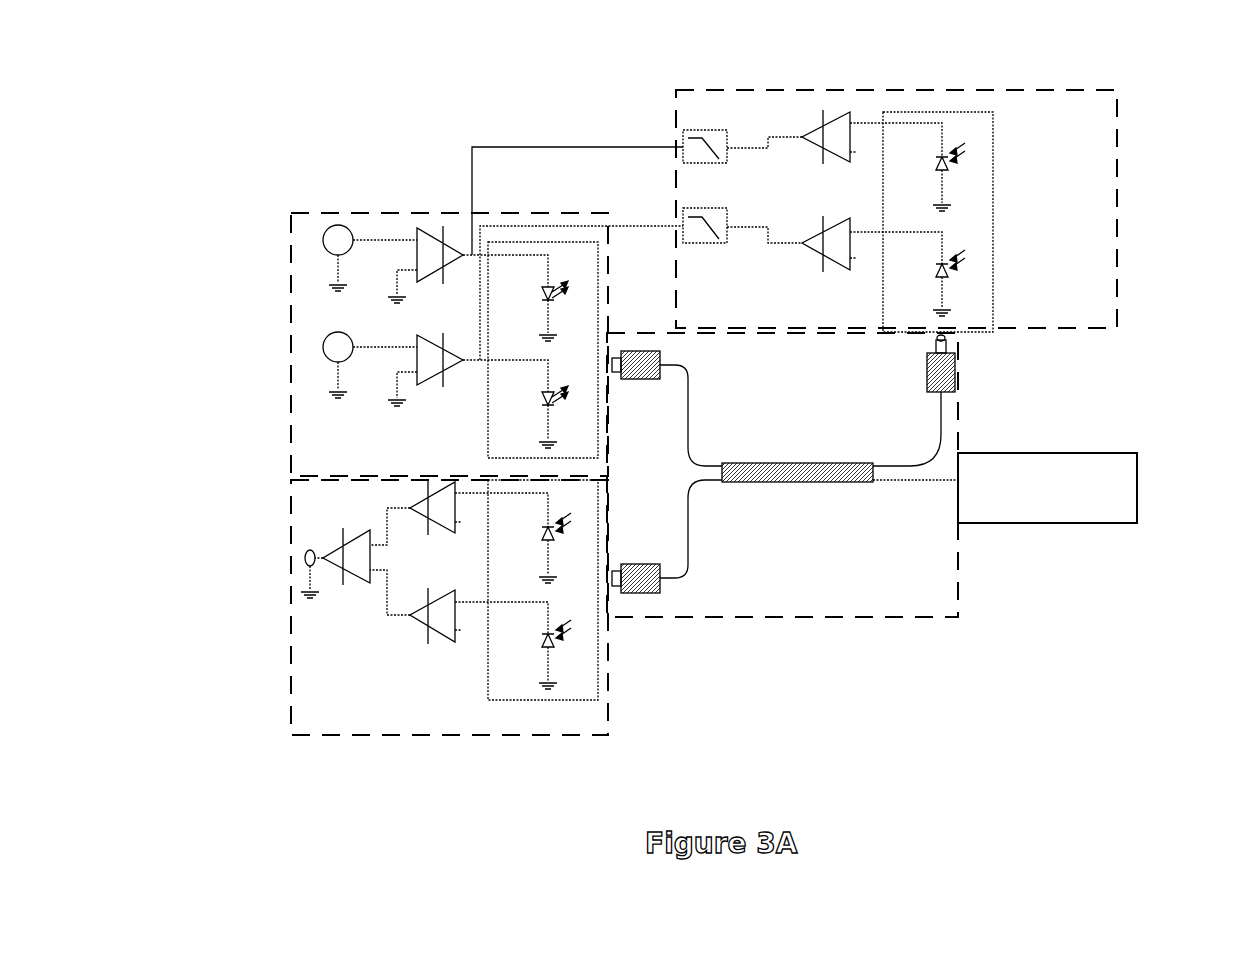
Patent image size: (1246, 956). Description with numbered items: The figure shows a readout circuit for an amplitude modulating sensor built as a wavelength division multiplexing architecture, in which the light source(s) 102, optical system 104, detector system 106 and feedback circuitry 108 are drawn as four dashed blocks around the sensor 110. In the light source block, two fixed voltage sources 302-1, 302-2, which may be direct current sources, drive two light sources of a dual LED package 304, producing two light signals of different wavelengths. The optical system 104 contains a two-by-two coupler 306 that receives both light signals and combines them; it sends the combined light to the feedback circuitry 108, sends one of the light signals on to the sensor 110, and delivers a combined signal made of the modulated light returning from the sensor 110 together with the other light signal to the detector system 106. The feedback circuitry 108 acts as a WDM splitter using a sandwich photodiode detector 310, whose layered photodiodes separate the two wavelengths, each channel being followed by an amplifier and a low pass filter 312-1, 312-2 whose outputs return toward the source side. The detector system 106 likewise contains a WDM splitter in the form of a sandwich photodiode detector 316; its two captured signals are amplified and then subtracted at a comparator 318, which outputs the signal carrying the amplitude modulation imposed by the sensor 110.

The light source(s) 102 is at (429, 311).
The optical system 104 is at (812, 506).
The detector system 106 is at (391, 607).
The feedback circuitry 108 is at (944, 211).
The sensor 110 is at (1137, 478).
The fixed voltage source 302-1 is at (343, 224).
The fixed voltage source 302-2 is at (330, 335).
The dual LED package 304 is at (530, 240).
The 2×2 coupler 306 is at (780, 483).
The sandwich photodiode detector 310 is at (993, 155).
The low pass filter 312-1 is at (722, 130).
The low pass filter 312-2 is at (727, 215).
The sandwich photodiode detector 316 is at (488, 690).
The comparator 318 is at (360, 578).